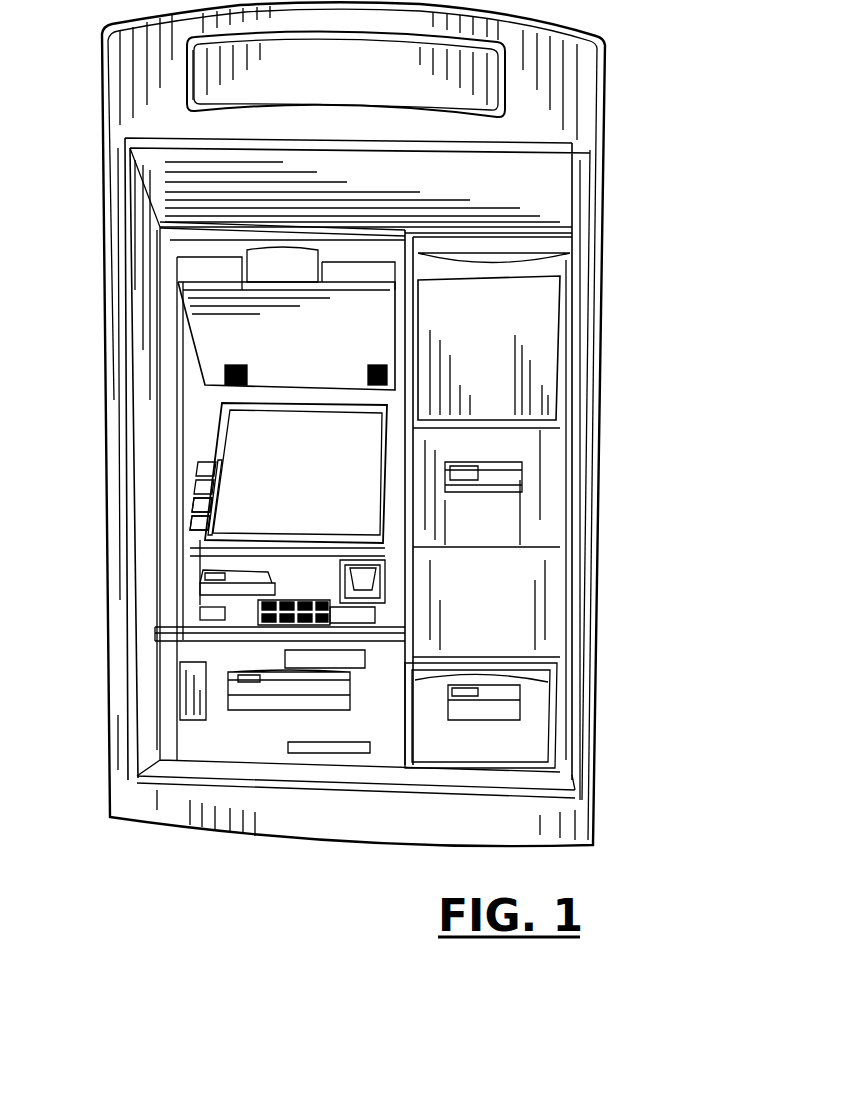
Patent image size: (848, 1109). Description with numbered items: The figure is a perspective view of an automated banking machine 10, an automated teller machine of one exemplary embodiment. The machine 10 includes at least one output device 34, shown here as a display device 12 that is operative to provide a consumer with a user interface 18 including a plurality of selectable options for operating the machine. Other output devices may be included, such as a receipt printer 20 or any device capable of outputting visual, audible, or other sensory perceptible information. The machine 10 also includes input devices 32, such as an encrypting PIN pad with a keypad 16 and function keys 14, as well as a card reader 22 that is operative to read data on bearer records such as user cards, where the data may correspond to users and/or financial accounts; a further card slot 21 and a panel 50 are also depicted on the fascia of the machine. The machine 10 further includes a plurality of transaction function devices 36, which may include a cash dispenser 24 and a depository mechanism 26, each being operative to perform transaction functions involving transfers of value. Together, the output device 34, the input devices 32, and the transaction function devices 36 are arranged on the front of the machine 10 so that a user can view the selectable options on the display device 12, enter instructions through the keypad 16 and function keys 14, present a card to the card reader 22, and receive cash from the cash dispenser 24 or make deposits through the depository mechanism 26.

The automated banking machine 10 is at (625, 153).
The display panel 50 is at (550, 293).
The output device 34 is at (205, 410).
The display device 12 is at (235, 455).
The input devices 32 is at (175, 488).
The user interface 18 is at (220, 505).
The function keys 14 is at (190, 540).
The receipt printer 20 is at (205, 577).
The card reader 22 is at (365, 597).
The keypad 16 is at (272, 615).
The card slot 21 is at (522, 477).
The depository mechanism 26 is at (505, 708).
The cash dispenser 24 is at (245, 700).
The transaction function devices 36 is at (430, 738).